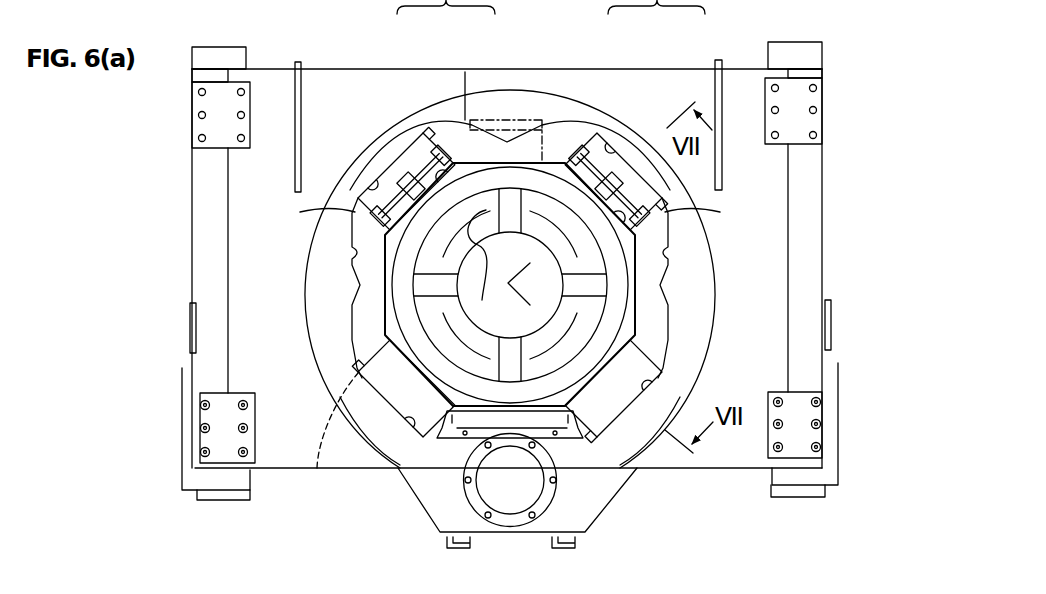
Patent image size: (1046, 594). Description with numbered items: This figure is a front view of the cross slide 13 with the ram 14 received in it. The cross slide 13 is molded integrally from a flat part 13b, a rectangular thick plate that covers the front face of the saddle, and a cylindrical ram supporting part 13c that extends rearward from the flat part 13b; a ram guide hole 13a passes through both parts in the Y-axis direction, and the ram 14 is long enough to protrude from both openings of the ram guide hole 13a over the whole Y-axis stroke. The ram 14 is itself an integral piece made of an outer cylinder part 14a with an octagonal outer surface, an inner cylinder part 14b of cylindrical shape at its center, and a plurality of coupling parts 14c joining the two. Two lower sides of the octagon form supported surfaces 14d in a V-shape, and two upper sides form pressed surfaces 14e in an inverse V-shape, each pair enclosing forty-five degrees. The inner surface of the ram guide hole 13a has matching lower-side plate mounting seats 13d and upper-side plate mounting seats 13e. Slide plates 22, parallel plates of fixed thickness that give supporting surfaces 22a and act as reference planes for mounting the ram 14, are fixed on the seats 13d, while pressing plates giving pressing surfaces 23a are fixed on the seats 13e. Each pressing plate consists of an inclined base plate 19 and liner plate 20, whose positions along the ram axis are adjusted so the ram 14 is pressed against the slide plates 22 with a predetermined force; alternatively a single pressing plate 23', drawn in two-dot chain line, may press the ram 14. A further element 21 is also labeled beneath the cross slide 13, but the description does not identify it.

The cross slide 13 is at (190, 228).
The ram guide hole 13a is at (352, 262).
The flat part 13b is at (283, 468).
The ram supporting part 13c is at (317, 470).
The lower-side plate mounting seat 13d is at (423, 398).
The upper-side plate mounting seat 13e is at (378, 175).
The ram 14 is at (640, 270).
The outer cylinder part 14a is at (655, 293).
The inner cylinder part 14b is at (600, 320).
The coupling part 14c is at (488, 285).
The supported surface 14d is at (600, 346).
The pressed surface 14e is at (475, 213).
The base plate 19 is at (458, 163).
The liner plate 20 is at (440, 128).
The shaft flange 21 is at (470, 497).
The slide plate 22 is at (360, 347).
The supporting surface 22a is at (405, 326).
The pressing surface 23a is at (355, 212).
The pressing plate 23' is at (524, 75).